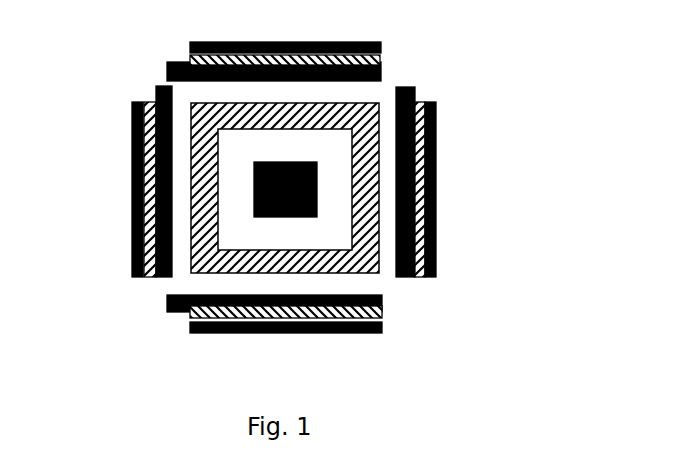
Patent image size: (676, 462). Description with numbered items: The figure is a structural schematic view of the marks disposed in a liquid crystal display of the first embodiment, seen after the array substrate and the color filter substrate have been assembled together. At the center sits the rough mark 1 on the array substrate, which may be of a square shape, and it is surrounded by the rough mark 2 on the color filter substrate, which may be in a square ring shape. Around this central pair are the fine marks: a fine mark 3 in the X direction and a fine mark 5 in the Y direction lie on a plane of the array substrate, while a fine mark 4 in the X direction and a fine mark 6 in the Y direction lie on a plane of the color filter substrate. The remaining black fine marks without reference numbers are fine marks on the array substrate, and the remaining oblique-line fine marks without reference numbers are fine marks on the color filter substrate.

The rough mark on the array substrate 1 is at (254, 200).
The rough mark on the color filter substrate 2 is at (375, 256).
The fine mark in the X direction on the array substrate 3 is at (132, 178).
The fine mark in the X direction on the color filter substrate 4 is at (436, 177).
The fine mark in the Y direction on the array substrate 5 is at (190, 46).
The fine mark in the Y direction on the color filter substrate 6 is at (382, 315).